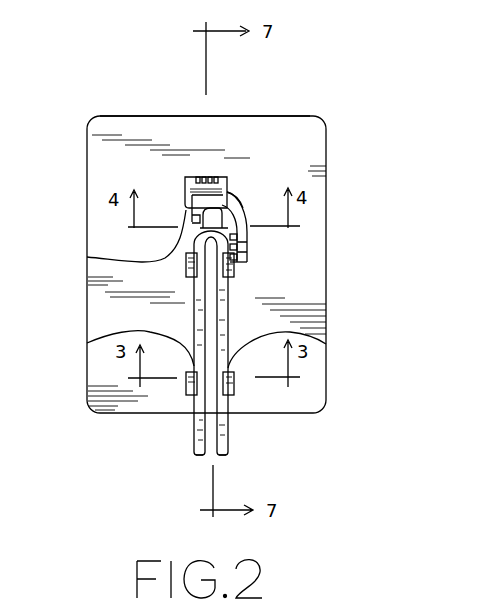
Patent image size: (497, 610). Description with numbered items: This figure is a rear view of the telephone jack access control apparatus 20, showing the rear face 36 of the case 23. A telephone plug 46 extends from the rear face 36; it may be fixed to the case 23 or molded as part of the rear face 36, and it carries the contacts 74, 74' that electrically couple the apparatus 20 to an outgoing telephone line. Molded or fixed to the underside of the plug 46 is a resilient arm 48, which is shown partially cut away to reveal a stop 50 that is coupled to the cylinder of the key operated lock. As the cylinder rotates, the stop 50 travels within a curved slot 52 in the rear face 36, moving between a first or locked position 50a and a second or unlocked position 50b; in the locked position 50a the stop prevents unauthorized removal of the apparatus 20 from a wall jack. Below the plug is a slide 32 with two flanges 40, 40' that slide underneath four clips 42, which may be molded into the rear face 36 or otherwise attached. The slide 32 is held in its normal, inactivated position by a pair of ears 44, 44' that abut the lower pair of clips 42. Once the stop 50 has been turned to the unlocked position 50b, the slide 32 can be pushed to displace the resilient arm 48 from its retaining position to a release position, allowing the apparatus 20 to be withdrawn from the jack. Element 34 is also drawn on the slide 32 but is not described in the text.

The telephone jack access control apparatus 20 is at (97, 96).
The case 23 is at (87, 200).
The rear face 36 is at (153, 117).
The telephone plug 46 is at (224, 177).
The contact 74 is at (174, 117).
The contact 74' is at (193, 117).
The resilient arm 48 is at (87, 257).
The stop 50 is at (246, 222).
The first or locked position 50a is at (241, 212).
The second or unlocked position 50b is at (247, 262).
The curved slot 52 is at (247, 232).
The flange 40 is at (196, 348).
The flange 40' is at (239, 364).
The leg end 34 is at (203, 457).
The slide 32 is at (222, 457).
The clips 42 is at (186, 274).
The ear 44 is at (123, 351).
The ear 44' is at (301, 348).